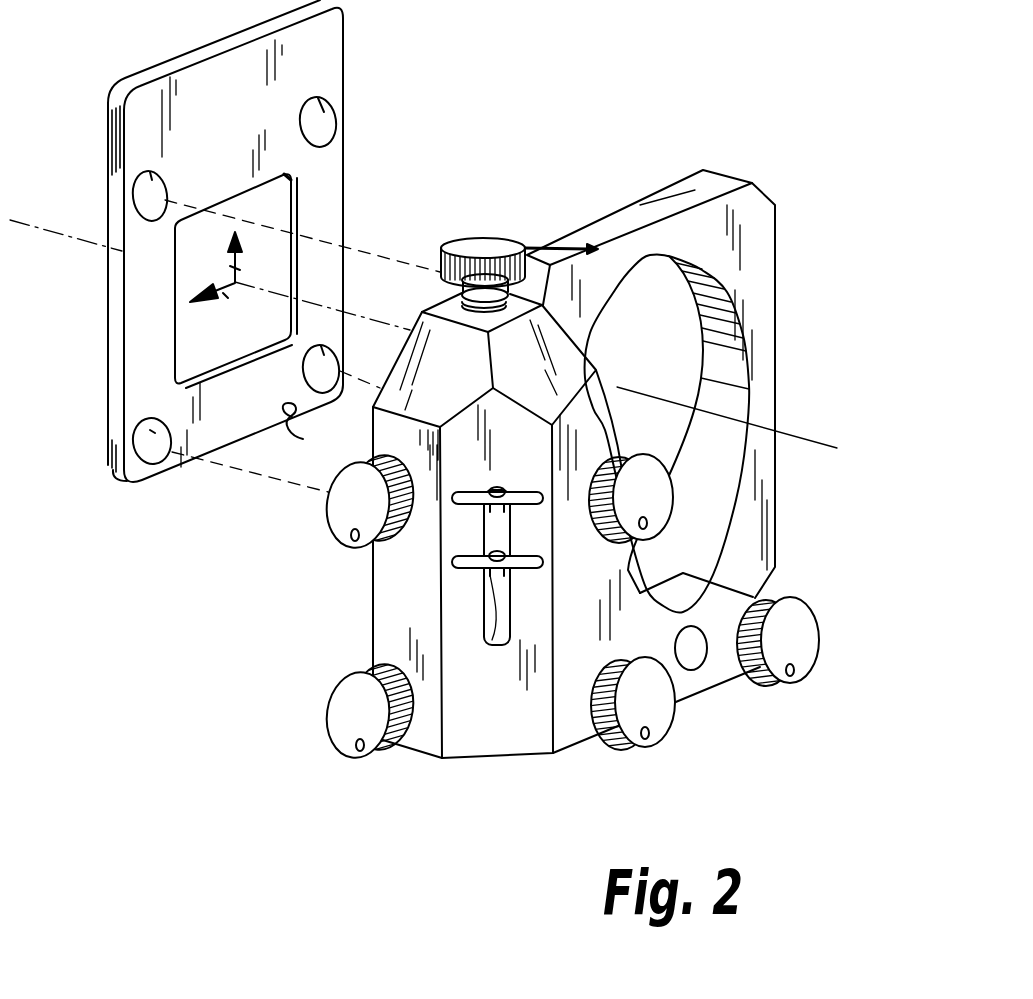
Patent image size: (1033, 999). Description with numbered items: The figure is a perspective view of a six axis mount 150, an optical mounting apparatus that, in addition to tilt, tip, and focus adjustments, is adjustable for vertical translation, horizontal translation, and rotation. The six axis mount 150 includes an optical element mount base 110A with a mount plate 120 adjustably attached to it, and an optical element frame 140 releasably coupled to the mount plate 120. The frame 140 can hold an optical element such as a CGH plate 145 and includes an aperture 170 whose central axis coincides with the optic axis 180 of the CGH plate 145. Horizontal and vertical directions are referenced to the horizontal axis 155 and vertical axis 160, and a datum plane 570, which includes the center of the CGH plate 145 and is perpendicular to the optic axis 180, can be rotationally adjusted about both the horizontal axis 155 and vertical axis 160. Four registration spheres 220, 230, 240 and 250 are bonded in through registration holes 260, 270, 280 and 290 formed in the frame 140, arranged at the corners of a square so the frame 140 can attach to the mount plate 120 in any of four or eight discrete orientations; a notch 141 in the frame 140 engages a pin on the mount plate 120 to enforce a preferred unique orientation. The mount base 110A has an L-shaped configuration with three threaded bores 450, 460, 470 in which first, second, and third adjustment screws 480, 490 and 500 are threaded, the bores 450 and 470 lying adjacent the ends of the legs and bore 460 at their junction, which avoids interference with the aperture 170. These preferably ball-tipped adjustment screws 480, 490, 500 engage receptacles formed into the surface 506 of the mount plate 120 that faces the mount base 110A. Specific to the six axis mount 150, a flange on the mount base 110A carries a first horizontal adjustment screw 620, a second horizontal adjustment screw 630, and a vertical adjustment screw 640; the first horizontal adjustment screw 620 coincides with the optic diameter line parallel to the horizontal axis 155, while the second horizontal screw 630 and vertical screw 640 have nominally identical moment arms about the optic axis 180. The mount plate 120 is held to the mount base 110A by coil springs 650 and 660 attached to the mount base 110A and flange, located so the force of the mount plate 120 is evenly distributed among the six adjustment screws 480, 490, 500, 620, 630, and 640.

The optical element mount base 110A is at (360, 573).
The mount plate 120 is at (790, 258).
The optical element frame 140 is at (347, 168).
The notch 141 is at (316, 429).
The CGH plate 145 is at (294, 180).
The six axis mount 150 is at (690, 410).
The horizontal axis 155 is at (225, 295).
The vertical axis 160 is at (235, 268).
The aperture 170 is at (297, 217).
The optic axis 180 is at (15, 220).
The registration sphere 220 is at (153, 430).
The registration sphere 230 is at (325, 365).
The registration sphere 240 is at (322, 112).
The registration sphere 250 is at (143, 202).
The registration hole 260 is at (132, 448).
The registration hole 270 is at (325, 363).
The registration hole 280 is at (318, 98).
The registration hole 290 is at (160, 173).
The threaded bore 450 is at (591, 400).
The threaded bore 460 is at (587, 700).
The threaded bore 470 is at (733, 641).
The first adjustment screw 480 is at (657, 503).
The second adjustment screw 490 is at (653, 713).
The third adjustment screw 500 is at (800, 637).
The surface 506 is at (763, 464).
The datum plane 570 is at (233, 285).
The first horizontal adjustment screw 620 is at (342, 507).
The second horizontal adjustment screw 630 is at (357, 718).
The vertical adjustment screw 640 is at (499, 245).
The coil spring 650 is at (490, 532).
The coil spring 660 is at (490, 598).